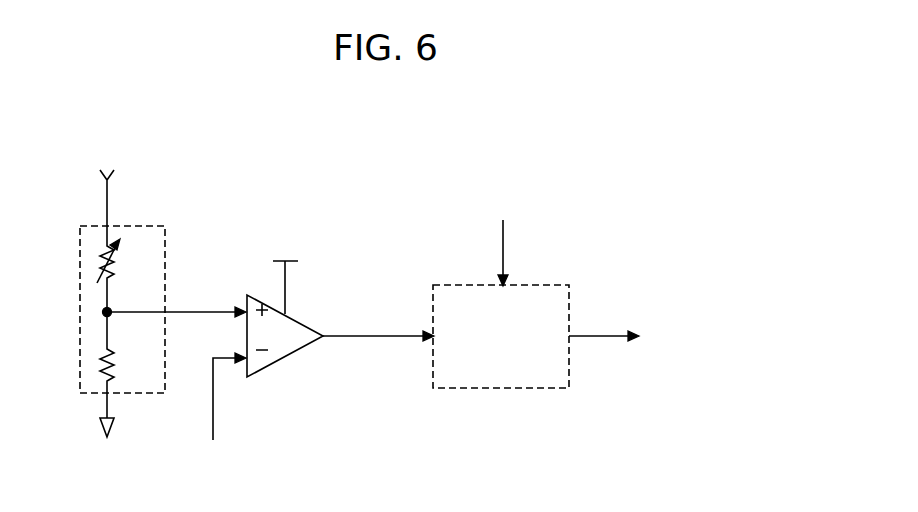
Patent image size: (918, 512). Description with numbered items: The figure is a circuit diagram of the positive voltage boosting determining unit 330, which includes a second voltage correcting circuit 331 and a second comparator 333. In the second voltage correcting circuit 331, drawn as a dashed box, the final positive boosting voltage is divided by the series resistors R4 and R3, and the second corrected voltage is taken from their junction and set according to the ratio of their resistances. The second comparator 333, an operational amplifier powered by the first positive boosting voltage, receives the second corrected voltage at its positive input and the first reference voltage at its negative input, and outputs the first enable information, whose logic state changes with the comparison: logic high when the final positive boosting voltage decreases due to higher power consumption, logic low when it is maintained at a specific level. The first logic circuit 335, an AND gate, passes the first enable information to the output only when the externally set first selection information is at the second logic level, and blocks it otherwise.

The positive voltage boosting determining unit 330 is at (619, 196).
The second voltage correcting circuit 331 is at (128, 226).
The second comparator 333 is at (287, 359).
The first logic circuit 335 is at (503, 389).
The resistor R3 is at (123, 364).
The resistor R4 is at (122, 261).